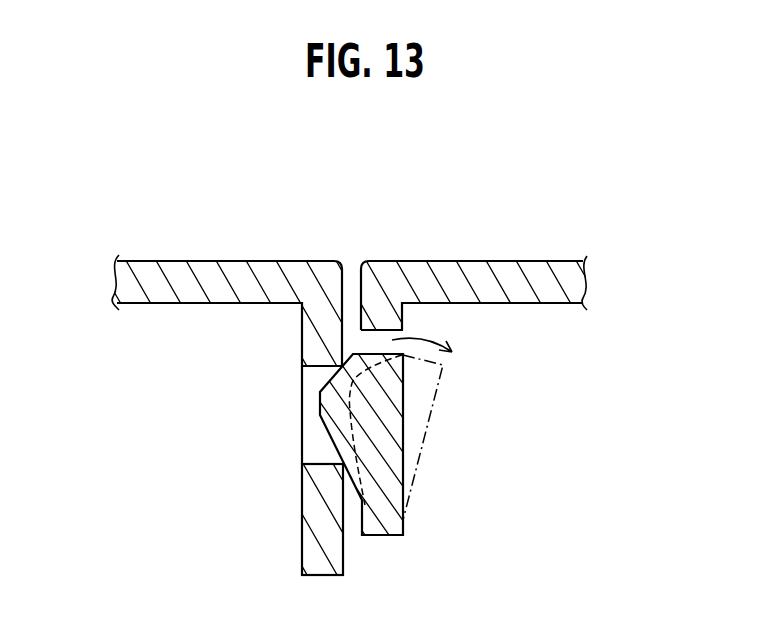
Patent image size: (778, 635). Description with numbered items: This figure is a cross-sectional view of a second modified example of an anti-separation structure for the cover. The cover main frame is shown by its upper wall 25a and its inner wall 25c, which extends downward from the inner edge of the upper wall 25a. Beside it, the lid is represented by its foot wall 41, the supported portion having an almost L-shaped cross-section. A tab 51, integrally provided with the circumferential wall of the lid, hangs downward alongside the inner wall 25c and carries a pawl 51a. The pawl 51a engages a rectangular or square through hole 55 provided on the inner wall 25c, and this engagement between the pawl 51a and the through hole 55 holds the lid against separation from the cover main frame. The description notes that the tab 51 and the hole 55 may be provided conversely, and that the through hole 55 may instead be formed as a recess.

The upper wall 25a is at (228, 268).
The inner wall 25c is at (310, 333).
The foot wall 41 is at (480, 282).
The tab 51 is at (378, 512).
The pawl 51a is at (330, 401).
The through hole 55 is at (318, 452).